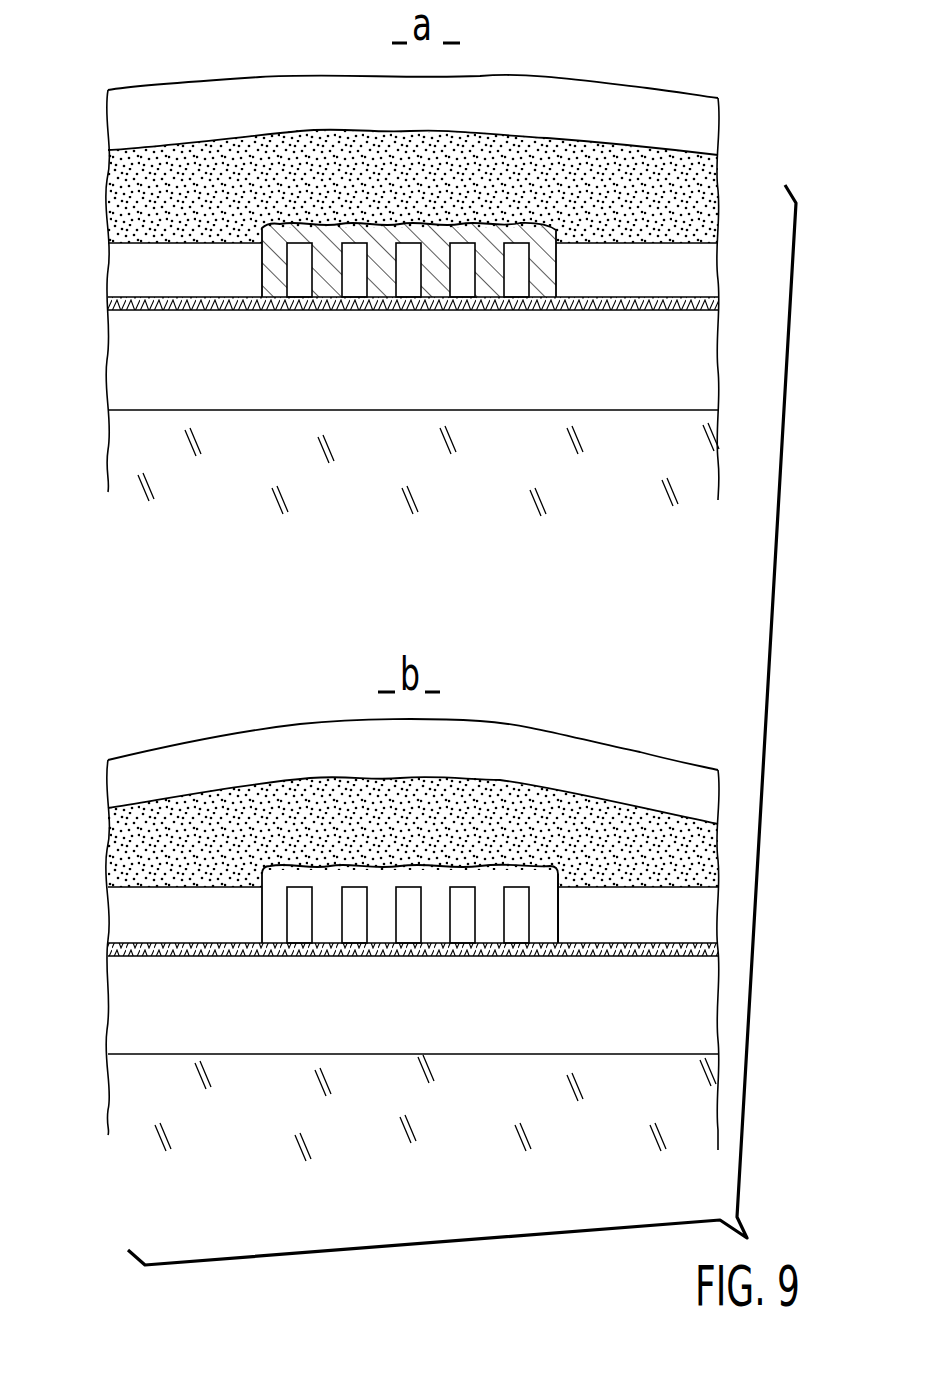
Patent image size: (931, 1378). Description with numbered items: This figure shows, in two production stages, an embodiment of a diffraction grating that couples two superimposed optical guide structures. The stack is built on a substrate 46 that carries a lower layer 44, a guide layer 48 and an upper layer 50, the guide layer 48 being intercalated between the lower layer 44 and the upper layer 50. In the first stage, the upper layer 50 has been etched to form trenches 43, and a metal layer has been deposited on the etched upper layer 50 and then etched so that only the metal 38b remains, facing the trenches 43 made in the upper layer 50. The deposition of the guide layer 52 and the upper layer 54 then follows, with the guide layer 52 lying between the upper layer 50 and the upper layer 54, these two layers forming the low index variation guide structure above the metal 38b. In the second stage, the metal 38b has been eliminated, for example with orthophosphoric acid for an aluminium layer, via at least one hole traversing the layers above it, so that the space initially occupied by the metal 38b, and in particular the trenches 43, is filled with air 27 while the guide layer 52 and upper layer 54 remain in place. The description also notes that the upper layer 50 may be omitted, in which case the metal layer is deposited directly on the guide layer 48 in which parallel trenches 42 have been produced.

The upper layer 54 is at (138, 110).
The guide layer 52 is at (150, 190).
The guide layer 48 is at (118, 305).
The lower layer 44 is at (152, 386).
The substrate 46 is at (160, 462).
The parallel trenches 42 is at (262, 266).
The metal 38b is at (517, 240).
The upper layer 50 is at (509, 278).
The trenches 43 is at (382, 918).
The air 27 is at (525, 873).